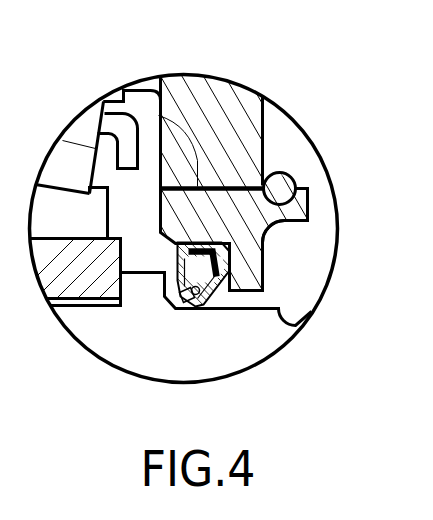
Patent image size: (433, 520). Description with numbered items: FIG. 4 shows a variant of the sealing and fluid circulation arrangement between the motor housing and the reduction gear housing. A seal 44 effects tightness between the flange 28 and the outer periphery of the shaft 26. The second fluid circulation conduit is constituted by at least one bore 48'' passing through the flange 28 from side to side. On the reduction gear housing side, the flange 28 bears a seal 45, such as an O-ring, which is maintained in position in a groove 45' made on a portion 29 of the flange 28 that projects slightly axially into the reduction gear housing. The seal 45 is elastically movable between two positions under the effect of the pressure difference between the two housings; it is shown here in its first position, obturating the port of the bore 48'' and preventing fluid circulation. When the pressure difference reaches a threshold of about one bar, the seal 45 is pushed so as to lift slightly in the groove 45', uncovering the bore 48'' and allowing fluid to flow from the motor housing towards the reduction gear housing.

The shaft 26 is at (232, 357).
The flange 28 is at (200, 103).
The portion of the flange 29 is at (309, 200).
The seal 44 is at (187, 306).
The seal 45 is at (300, 136).
The groove 45' is at (330, 252).
The bore 48'' is at (98, 91).